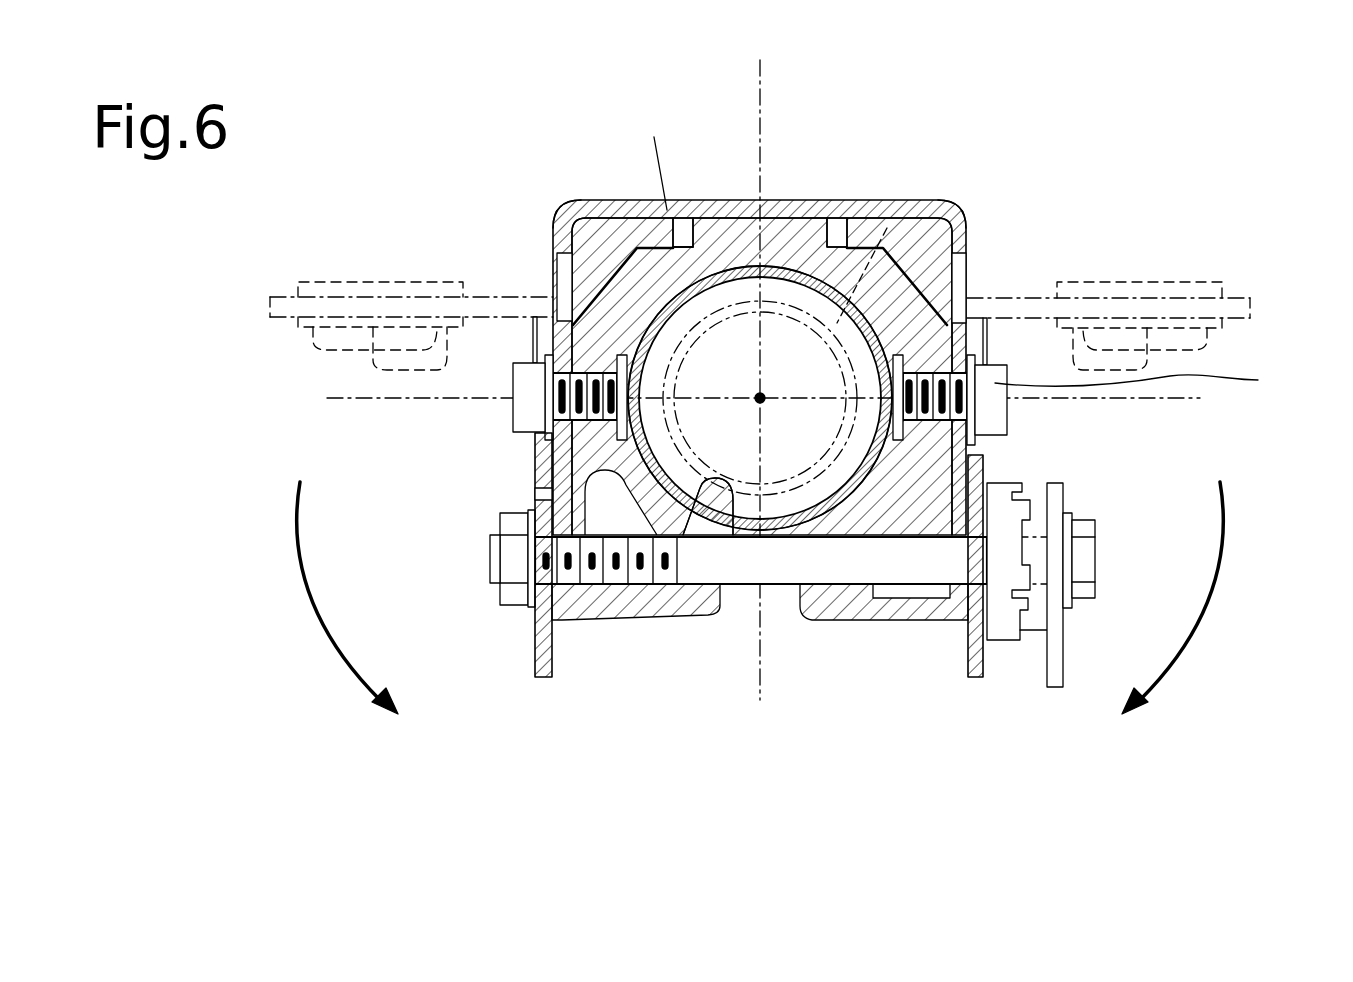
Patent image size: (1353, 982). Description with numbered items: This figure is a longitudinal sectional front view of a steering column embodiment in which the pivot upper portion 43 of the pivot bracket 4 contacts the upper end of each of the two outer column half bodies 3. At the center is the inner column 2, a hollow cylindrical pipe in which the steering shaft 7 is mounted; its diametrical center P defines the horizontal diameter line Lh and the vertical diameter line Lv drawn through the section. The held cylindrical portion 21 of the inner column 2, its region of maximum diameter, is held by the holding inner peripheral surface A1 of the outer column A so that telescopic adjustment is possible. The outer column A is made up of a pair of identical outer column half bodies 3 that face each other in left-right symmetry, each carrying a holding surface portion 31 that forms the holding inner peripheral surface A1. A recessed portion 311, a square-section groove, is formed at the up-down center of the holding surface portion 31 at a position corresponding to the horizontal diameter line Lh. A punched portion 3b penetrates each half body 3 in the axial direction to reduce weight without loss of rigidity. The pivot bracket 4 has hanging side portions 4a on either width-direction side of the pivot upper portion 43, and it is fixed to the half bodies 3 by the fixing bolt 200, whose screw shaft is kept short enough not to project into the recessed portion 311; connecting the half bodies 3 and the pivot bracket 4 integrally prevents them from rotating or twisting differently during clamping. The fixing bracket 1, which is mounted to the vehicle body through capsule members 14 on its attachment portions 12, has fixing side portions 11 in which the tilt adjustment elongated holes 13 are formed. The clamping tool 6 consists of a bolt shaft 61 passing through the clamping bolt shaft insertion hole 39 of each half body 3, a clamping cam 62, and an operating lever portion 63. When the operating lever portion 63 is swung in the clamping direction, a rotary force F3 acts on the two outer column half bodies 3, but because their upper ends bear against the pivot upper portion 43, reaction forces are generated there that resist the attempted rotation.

The fixing bracket 1 is at (562, 663).
The inner column 2 is at (780, 250).
The held cylindrical portion 21 is at (836, 325).
The outer column half body 3 is at (600, 270).
The punched portion 3b is at (610, 503).
The pivot bracket 4 is at (578, 200).
The hanging side portion 4a is at (553, 288).
The clamping tool 6 is at (1108, 548).
The steering shaft 7 is at (887, 228).
The fixing side portion 11 is at (535, 658).
The attachment portion 12 is at (481, 283).
The tilt adjustment elongated hole 13 is at (533, 612).
The capsule member 14 is at (366, 283).
The holding surface portion 31 is at (724, 588).
The clamping bolt shaft insertion hole 39 is at (600, 562).
The pivot upper portion 43 is at (537, 330).
The bolt shaft 61 is at (781, 588).
The clamping cam 62 is at (1003, 490).
The operating lever portion 63 is at (1063, 658).
The fixing bolt 200 is at (475, 488).
The recessed portion 311 is at (545, 428).
The outer column A is at (668, 125).
The holding inner peripheral surface A1 is at (676, 232).
The diametrical center P is at (762, 396).
The vertical diameter line Lv is at (770, 93).
The horizontal diameter line Lh is at (1153, 400).
The rotary force F3 is at (762, 598).